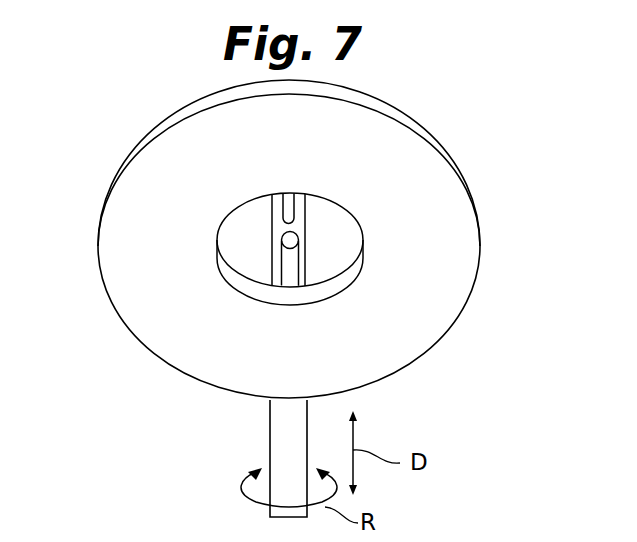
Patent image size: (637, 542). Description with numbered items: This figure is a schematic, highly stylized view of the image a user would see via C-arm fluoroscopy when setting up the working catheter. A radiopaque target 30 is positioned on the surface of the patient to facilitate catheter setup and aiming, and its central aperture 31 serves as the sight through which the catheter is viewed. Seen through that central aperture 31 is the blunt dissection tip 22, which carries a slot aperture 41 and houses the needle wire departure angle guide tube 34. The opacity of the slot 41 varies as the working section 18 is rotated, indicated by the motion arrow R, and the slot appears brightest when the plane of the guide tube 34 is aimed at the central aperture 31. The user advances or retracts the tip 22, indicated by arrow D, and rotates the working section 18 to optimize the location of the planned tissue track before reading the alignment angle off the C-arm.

The radiopaque target 30 is at (412, 313).
The central aperture 31 is at (255, 286).
The needle wire departure angle guide tube 34 is at (288, 262).
The blunt dissection tip 22 is at (306, 223).
The slot aperture 41 is at (299, 196).
The working section 18 is at (283, 427).